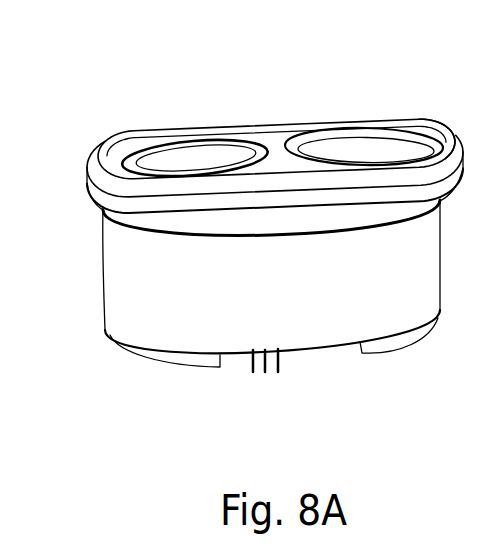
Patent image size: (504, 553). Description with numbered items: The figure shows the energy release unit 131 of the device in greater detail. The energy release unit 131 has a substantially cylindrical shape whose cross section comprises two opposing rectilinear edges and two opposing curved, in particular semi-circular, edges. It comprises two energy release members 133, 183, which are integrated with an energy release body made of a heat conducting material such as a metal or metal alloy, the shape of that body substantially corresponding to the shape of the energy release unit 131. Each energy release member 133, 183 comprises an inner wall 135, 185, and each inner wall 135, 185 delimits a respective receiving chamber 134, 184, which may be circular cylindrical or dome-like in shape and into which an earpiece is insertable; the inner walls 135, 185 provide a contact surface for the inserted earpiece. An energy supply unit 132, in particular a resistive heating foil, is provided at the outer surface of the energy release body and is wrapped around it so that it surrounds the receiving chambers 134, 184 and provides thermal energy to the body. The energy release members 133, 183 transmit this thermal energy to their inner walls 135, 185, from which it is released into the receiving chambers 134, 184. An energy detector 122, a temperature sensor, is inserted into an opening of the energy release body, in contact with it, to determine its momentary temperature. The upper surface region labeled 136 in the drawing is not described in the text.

The energy release unit 131 is at (98, 73).
The energy supply unit 132 is at (142, 302).
The energy release member 133 is at (180, 160).
The receiving chamber 134 is at (148, 163).
The inner wall 135 is at (227, 160).
The top surface 136 is at (268, 130).
The energy release member 183 is at (318, 148).
The receiving chamber 184 is at (382, 153).
The inner wall 185 is at (345, 153).
The energy detector 122 is at (250, 367).